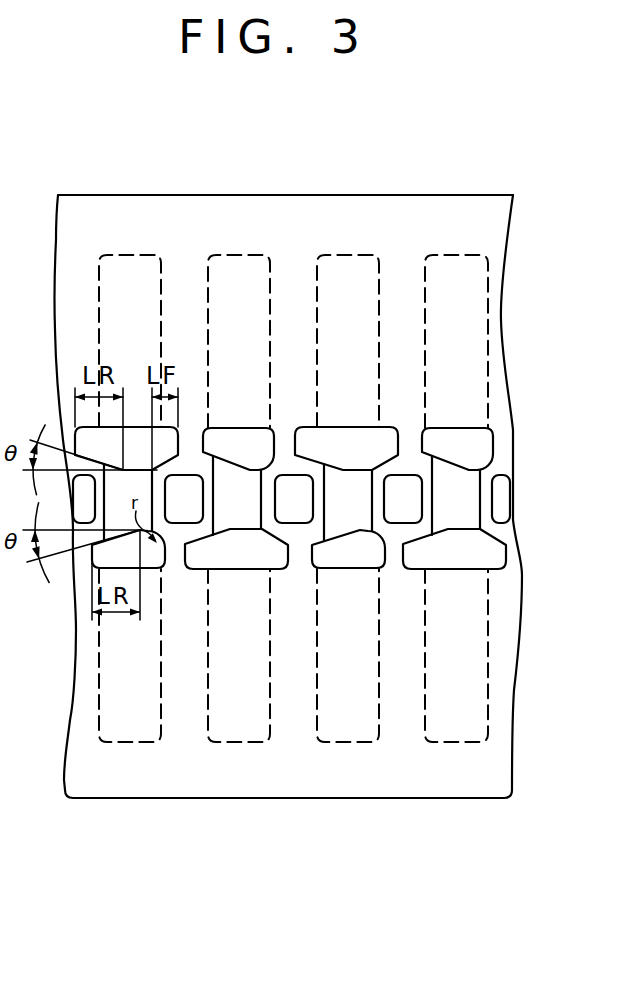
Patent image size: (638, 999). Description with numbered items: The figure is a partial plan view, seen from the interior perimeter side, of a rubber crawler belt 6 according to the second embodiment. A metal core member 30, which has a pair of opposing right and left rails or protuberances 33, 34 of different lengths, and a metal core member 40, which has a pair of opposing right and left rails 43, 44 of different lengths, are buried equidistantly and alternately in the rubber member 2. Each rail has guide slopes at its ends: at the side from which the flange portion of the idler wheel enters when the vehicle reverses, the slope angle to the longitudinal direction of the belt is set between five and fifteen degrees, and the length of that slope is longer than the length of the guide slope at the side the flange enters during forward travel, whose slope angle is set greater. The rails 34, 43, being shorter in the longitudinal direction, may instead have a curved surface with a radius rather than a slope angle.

The rubber member 2 is at (180, 193).
The rubber crawler belt 6 is at (88, 193).
The metal core member 30 is at (341, 255).
The rail 33 is at (345, 427).
The rail 34 is at (342, 571).
The metal core member 40 is at (460, 255).
The rail 43 is at (455, 427).
The rail 44 is at (452, 571).